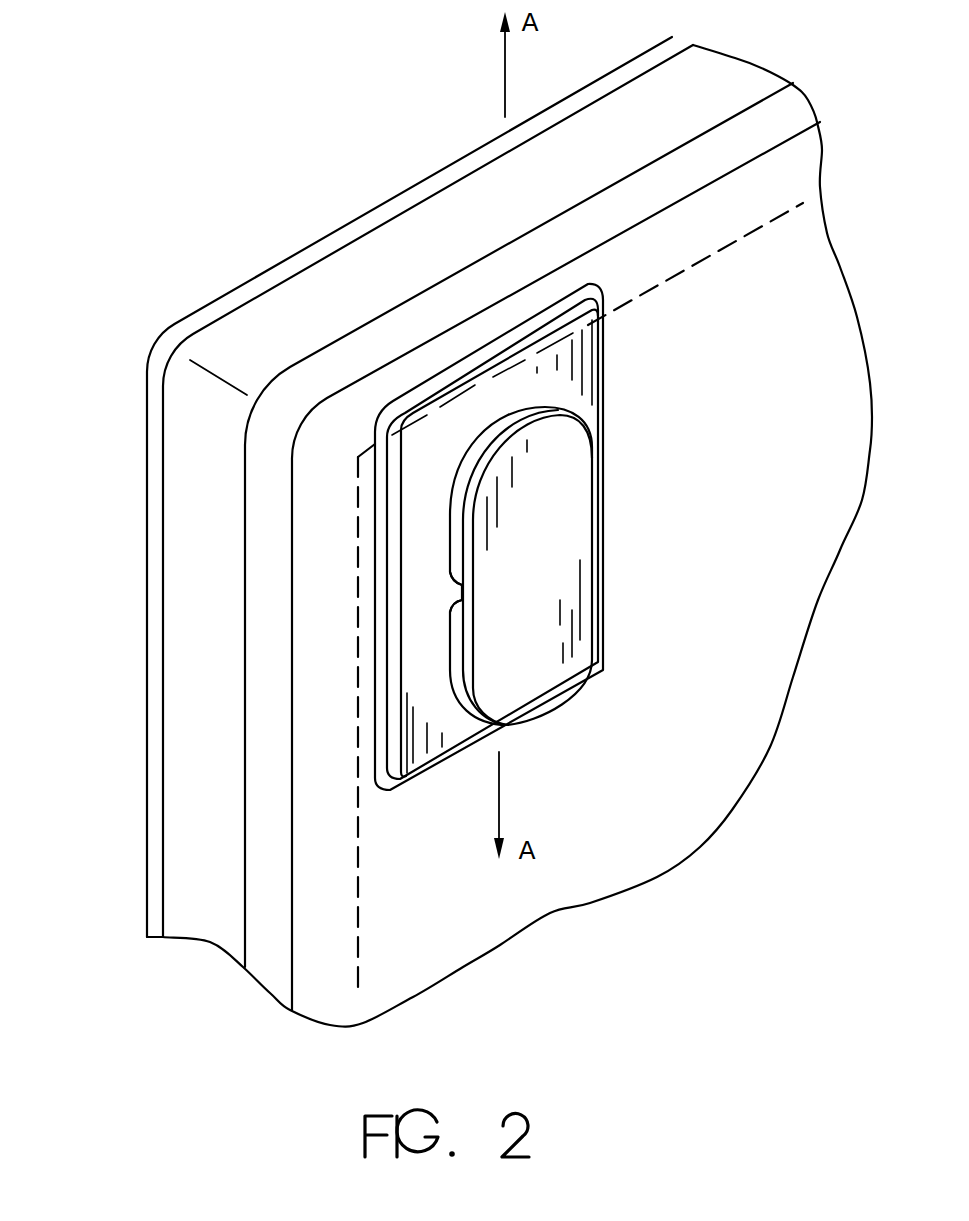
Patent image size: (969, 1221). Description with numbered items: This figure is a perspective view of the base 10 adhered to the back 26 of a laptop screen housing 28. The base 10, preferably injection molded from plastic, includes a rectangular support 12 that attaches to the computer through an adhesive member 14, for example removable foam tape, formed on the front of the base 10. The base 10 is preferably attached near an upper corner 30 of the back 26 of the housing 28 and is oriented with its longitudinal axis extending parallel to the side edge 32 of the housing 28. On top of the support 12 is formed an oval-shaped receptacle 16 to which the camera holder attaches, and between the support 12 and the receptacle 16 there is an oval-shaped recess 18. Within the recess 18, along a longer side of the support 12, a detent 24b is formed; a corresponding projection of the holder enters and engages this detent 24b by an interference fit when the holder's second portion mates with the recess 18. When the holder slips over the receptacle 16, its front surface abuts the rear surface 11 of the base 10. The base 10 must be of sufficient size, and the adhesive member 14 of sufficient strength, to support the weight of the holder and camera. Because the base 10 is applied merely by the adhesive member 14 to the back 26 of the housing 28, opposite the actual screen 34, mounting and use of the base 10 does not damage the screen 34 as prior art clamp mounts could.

The base 10 is at (513, 537).
The rear surface 11 is at (600, 388).
The support 12 is at (598, 662).
The adhesive member 14 is at (375, 742).
The receptacle 16 is at (580, 547).
The recess 18 is at (473, 487).
The detent 24b is at (458, 592).
The back 26 is at (725, 807).
The laptop screen housing 28 is at (451, 532).
The upper corner 30 is at (278, 393).
The side edge 32 is at (207, 940).
The screen 34 is at (707, 258).